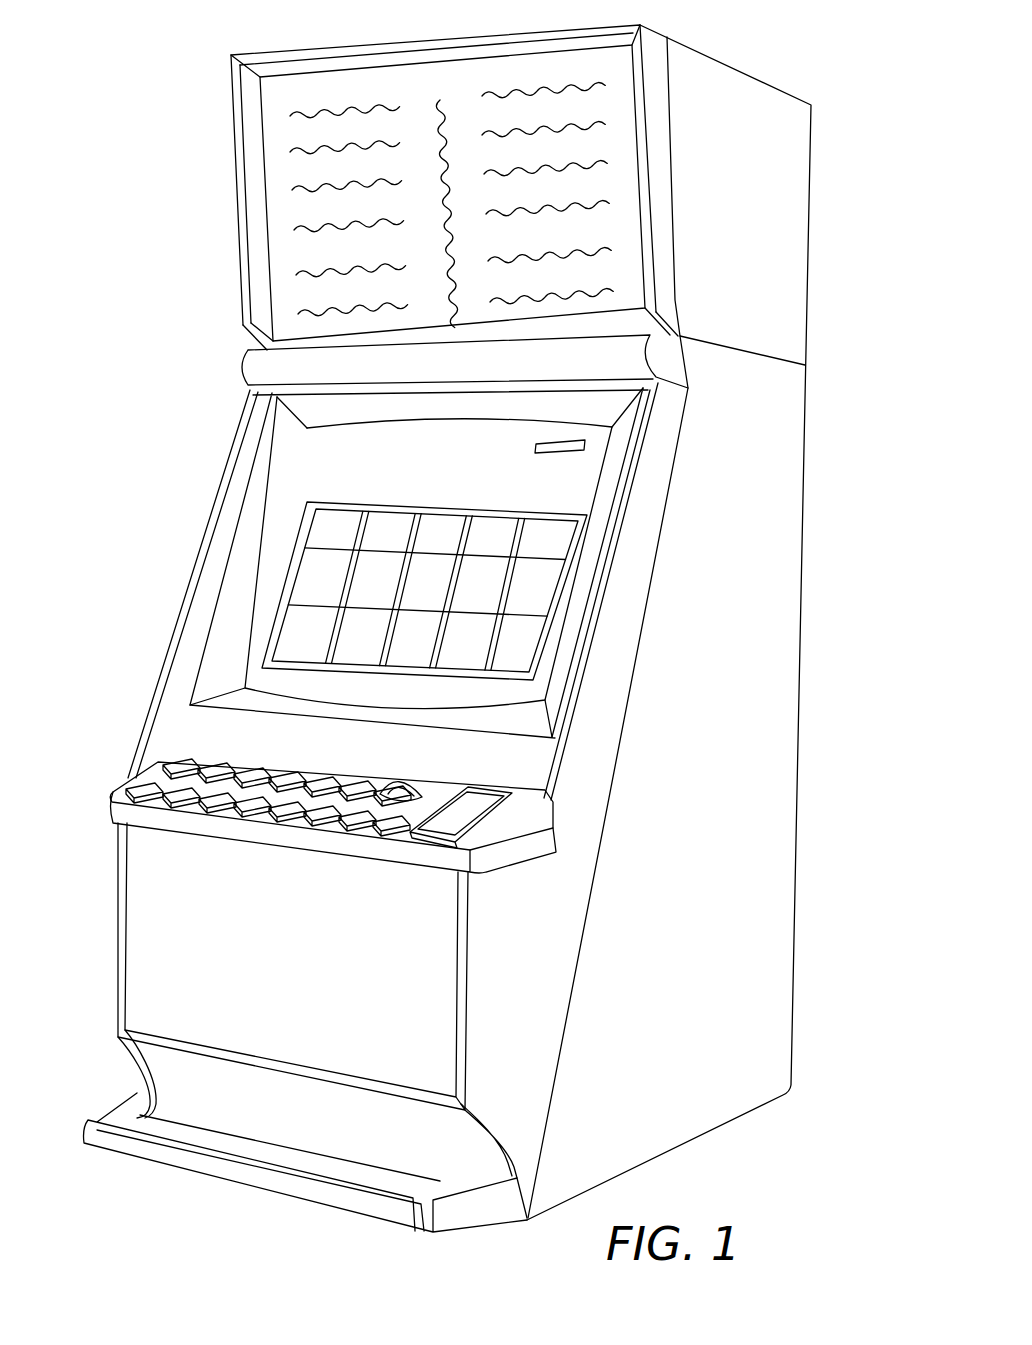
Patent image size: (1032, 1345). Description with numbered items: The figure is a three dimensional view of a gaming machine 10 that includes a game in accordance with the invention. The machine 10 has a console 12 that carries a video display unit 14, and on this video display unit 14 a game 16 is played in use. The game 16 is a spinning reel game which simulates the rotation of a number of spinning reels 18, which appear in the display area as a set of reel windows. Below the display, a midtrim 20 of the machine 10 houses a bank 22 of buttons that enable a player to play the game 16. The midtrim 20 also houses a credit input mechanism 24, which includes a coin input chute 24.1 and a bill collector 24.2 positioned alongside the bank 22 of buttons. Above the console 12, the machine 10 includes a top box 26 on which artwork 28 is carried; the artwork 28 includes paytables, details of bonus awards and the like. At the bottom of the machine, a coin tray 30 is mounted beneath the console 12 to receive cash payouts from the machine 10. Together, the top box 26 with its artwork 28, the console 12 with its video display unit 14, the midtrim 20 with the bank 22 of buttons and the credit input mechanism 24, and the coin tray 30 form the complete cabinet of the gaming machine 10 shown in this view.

The gaming machine 10 is at (798, 64).
The console 12 is at (778, 828).
The video display unit 14 is at (250, 636).
The game 16 is at (280, 567).
The spinning reels 18 is at (453, 498).
The midtrim 20 is at (112, 812).
The bank of buttons 22 is at (163, 752).
The credit input mechanism 24 is at (445, 755).
The coin input chute 24.1 is at (400, 772).
The bill collector 24.2 is at (427, 830).
The top box 26 is at (238, 300).
The artwork 28 is at (300, 168).
The coin tray 30 is at (80, 1130).